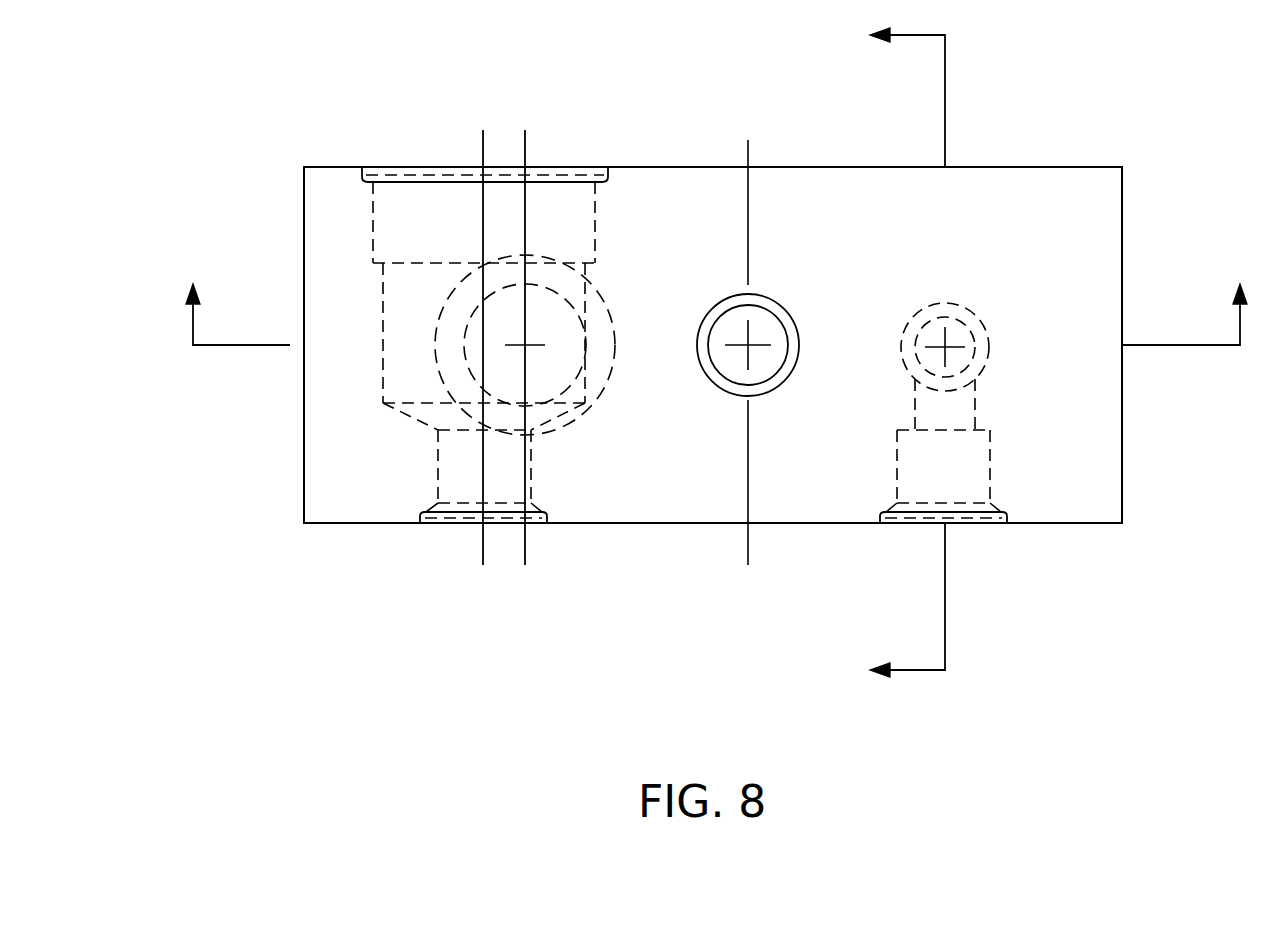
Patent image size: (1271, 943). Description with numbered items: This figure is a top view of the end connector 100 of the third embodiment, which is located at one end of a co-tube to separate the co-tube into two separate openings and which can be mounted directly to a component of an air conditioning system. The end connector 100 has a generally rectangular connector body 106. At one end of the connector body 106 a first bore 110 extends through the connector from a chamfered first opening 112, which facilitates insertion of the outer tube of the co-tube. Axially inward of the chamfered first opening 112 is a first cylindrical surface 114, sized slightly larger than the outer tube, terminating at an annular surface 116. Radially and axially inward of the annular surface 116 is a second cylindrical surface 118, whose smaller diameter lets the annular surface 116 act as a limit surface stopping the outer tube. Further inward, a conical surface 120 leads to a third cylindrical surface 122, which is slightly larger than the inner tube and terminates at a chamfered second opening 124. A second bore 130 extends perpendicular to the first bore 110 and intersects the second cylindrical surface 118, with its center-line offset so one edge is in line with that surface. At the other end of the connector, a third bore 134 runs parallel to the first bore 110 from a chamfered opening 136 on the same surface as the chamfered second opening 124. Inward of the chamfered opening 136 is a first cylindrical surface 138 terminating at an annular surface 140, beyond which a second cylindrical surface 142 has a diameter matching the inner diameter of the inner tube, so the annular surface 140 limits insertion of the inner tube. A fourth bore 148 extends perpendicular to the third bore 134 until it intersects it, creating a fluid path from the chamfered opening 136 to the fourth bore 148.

The end connector 100 is at (1172, 150).
The connector body 106 is at (1007, 212).
The first bore 110 is at (570, 222).
The chamfered first opening 112 is at (443, 167).
The first cylindrical surface 114 is at (373, 226).
The annular surface 116 is at (373, 264).
The second cylindrical surface 118 is at (383, 378).
The conical surface 120 is at (420, 422).
The third cylindrical surface 122 is at (437, 475).
The chamfered second opening 124 is at (450, 527).
The second bore 130 is at (552, 322).
The third bore 134 is at (897, 465).
The chamfered opening 136 is at (985, 527).
The first cylindrical surface 138 is at (990, 465).
The annular surface 140 is at (988, 430).
The second cylindrical surface 142 is at (975, 392).
The fourth bore 148 is at (966, 334).